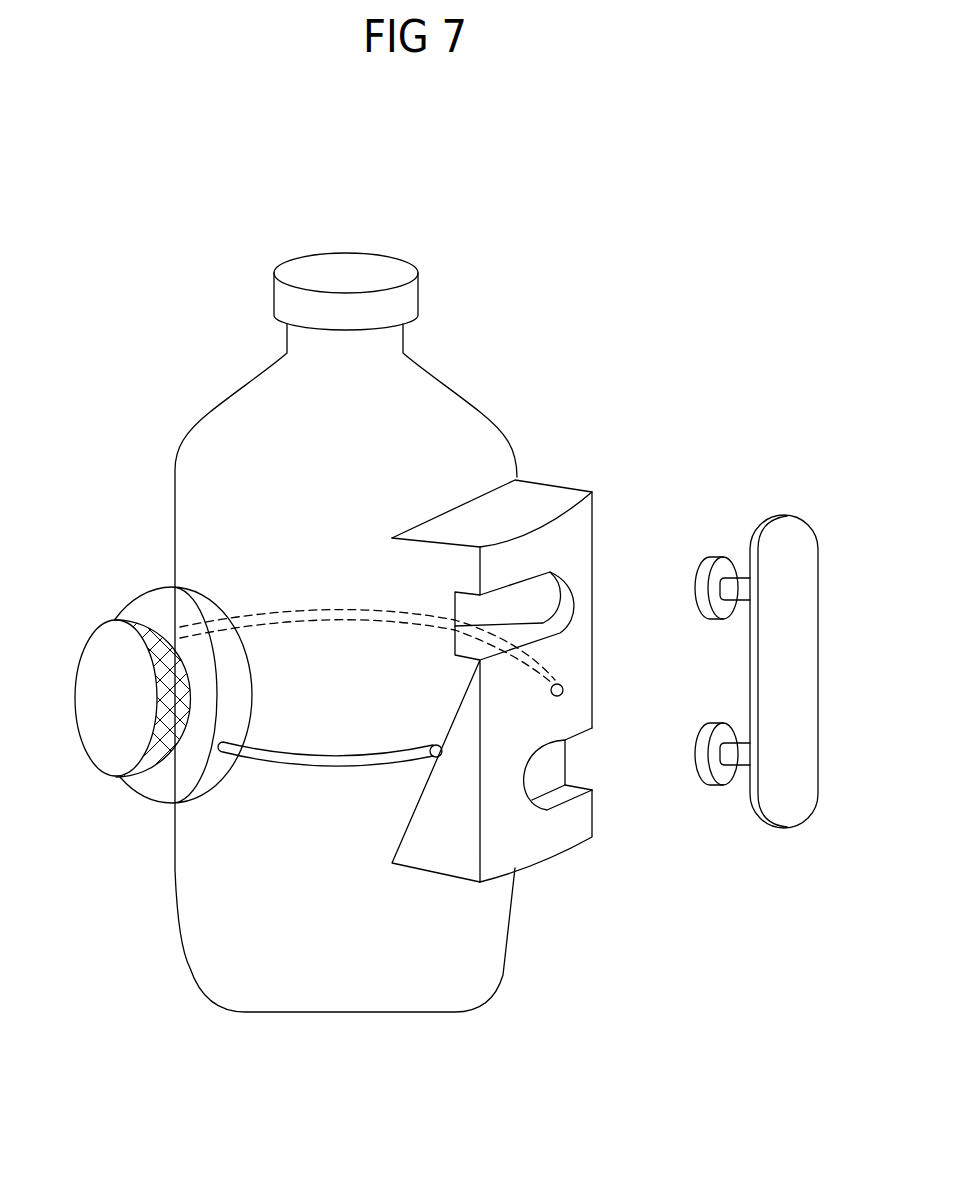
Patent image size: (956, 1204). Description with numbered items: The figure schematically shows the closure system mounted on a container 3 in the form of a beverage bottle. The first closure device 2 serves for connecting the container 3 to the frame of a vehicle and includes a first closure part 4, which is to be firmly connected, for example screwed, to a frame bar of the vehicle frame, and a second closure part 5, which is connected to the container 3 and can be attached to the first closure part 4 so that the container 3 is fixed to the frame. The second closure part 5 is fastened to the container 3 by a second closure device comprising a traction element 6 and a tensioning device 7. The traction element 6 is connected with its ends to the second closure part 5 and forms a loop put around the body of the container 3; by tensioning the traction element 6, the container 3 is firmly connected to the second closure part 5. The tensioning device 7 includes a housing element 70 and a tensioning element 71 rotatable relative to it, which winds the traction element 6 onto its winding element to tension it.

The first closure device 2 is at (628, 886).
The container 3 is at (494, 338).
The first closure part 4 is at (763, 868).
The second closure part 5 is at (537, 888).
The traction element 6 is at (303, 757).
The tensioning device 7 is at (148, 709).
The housing element 70 is at (210, 783).
The tensioning element 71 is at (100, 752).